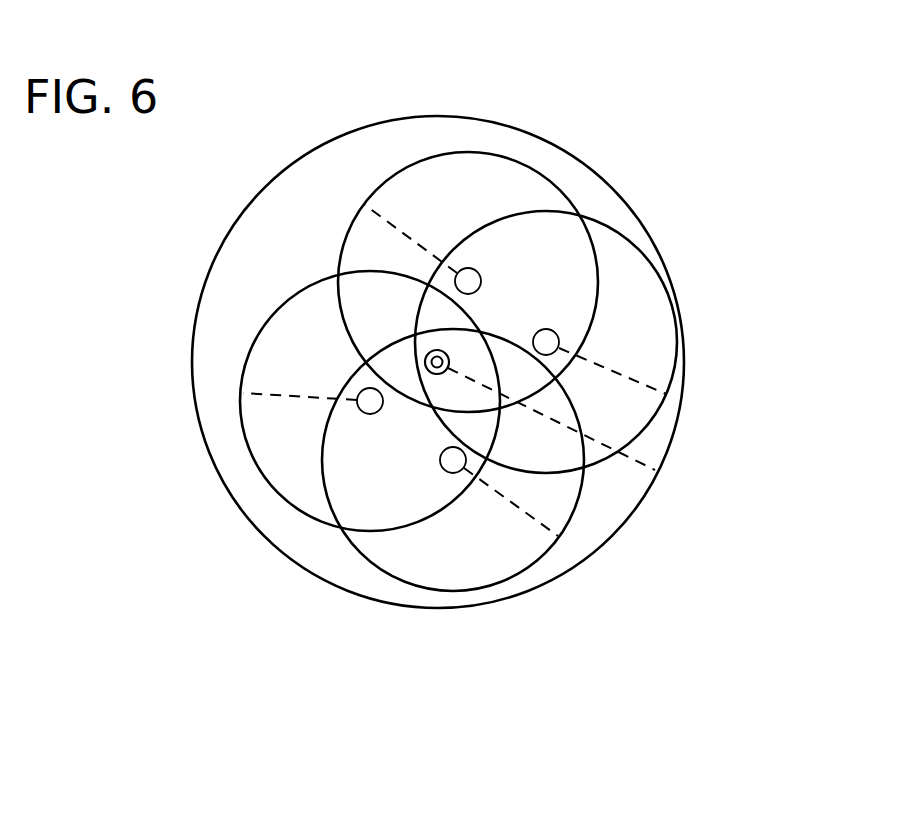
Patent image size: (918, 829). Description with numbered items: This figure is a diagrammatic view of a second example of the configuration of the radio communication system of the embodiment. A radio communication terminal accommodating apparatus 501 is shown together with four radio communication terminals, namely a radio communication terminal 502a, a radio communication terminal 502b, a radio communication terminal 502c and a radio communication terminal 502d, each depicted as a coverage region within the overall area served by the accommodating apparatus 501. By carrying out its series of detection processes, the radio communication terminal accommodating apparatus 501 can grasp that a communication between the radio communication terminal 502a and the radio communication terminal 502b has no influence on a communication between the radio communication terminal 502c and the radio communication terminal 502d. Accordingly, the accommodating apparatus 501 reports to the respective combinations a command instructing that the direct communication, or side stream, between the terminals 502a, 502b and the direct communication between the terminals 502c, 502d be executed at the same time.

The radio communication terminal accommodating apparatus 501 is at (437, 374).
The radio communication terminal 502a is at (470, 268).
The radio communication terminal 502b is at (555, 332).
The radio communication terminal 502c is at (361, 410).
The radio communication terminal 502d is at (462, 469).